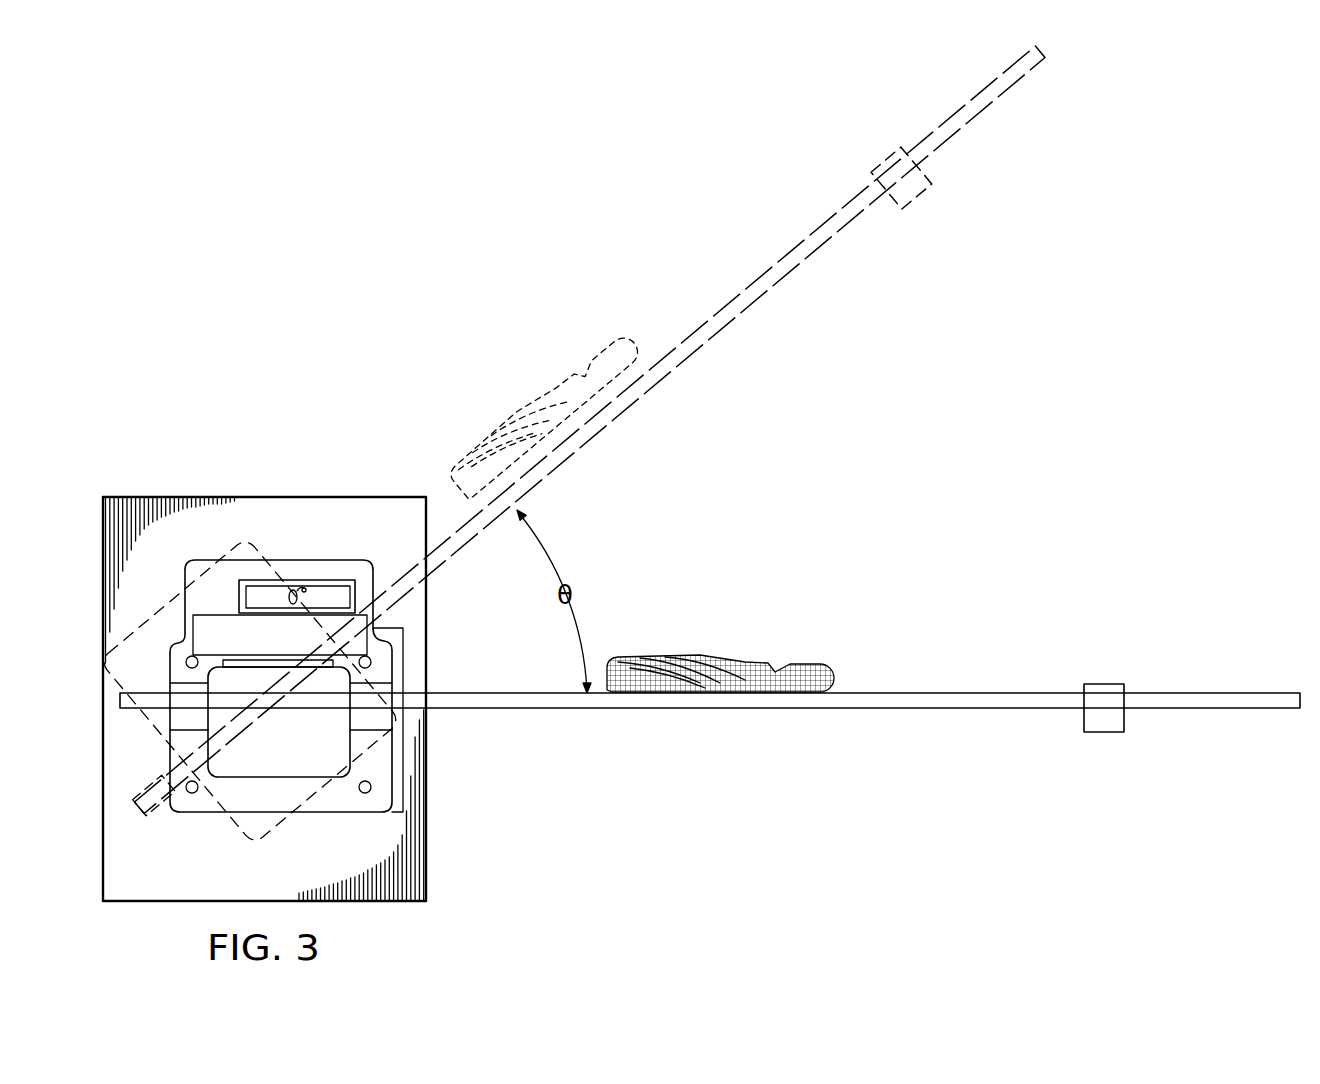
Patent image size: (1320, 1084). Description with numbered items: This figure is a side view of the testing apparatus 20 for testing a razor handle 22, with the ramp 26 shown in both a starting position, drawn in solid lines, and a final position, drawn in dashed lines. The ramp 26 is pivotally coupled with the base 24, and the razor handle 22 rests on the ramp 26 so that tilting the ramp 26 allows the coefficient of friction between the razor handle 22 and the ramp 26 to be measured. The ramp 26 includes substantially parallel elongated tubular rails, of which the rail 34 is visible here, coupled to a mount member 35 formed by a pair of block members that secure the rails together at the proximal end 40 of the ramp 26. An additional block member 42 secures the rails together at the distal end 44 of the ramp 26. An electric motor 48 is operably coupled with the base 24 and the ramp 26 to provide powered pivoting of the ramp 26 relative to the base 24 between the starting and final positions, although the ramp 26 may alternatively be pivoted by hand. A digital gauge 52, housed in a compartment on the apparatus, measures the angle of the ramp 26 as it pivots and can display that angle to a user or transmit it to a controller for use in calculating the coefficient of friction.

The testing apparatus 20 is at (495, 205).
The razor handle 22 is at (737, 645).
The base 24 is at (264, 496).
The ramp 26 is at (905, 762).
The rail 34 is at (1211, 712).
The mount member 35 is at (202, 721).
The proximal end 40 is at (455, 762).
The additional block member 42 is at (1104, 683).
The distal end 44 is at (1064, 738).
The electric motor 48 is at (403, 655).
The digital gauge 52 is at (330, 580).